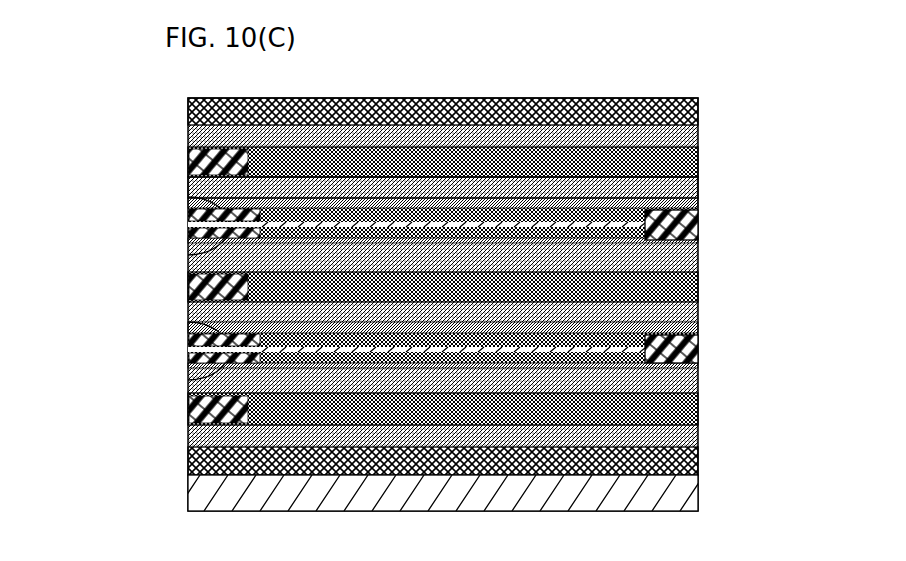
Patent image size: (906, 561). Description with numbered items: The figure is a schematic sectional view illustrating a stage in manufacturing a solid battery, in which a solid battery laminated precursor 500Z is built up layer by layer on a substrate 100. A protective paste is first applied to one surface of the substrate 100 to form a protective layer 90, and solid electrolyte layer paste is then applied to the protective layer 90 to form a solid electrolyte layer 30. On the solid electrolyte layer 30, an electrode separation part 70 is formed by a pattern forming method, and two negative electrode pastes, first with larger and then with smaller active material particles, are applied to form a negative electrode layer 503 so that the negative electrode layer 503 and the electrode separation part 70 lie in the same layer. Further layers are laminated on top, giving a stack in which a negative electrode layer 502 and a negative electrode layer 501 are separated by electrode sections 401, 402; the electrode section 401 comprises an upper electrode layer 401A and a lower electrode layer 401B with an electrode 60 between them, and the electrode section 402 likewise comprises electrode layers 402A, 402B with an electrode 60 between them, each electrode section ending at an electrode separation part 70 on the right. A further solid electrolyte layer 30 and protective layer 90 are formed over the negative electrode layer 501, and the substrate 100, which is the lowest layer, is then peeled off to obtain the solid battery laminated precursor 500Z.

The solid battery laminated precursor 500Z is at (611, 75).
The protective layer 90 is at (699, 108).
The substrate 100 is at (690, 488).
The negative electrode layer 501 is at (699, 158).
The negative electrode layer 502 is at (699, 285).
The negative electrode layer 503 is at (699, 408).
The solid electrolyte layer 30 is at (699, 190).
The electrode section 401 is at (359, 226).
The electrode section 402 is at (359, 351).
The electrode layer 401A is at (188, 199).
The electrode layer 401B is at (188, 253).
The electrode layer 402A is at (188, 323).
The electrode layer 402B is at (188, 378).
The electrode 60 is at (188, 224).
The electrode separation part 70 is at (688, 347).